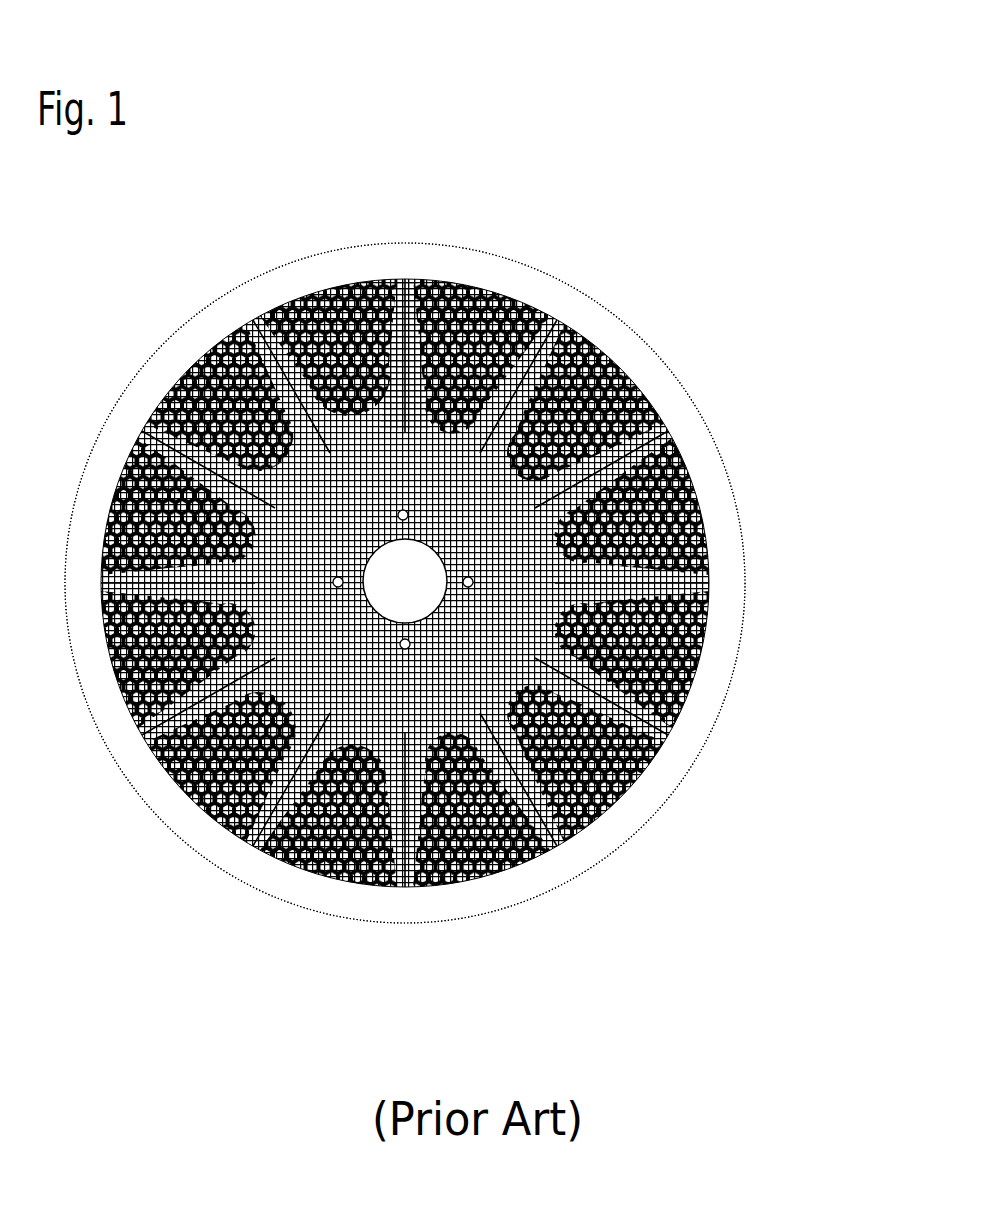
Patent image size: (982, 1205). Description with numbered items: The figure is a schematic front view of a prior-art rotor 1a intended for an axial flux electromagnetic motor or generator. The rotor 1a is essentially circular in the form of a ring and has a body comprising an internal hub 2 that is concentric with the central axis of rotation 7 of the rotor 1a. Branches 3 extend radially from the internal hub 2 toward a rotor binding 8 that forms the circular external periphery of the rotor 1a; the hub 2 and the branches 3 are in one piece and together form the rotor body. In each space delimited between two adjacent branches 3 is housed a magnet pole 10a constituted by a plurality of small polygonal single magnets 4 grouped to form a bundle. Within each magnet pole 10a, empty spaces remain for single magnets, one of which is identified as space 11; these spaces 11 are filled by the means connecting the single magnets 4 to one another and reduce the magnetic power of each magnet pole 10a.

The rotor 1a is at (237, 875).
The internal hub 2 is at (620, 448).
The branches 3 is at (645, 790).
The polygonal single magnets 4 is at (568, 840).
The central axis of rotation 7 is at (404, 586).
The rotor binding 8 is at (490, 887).
The magnet pole 10a is at (707, 212).
The empty space 11 is at (400, 347).